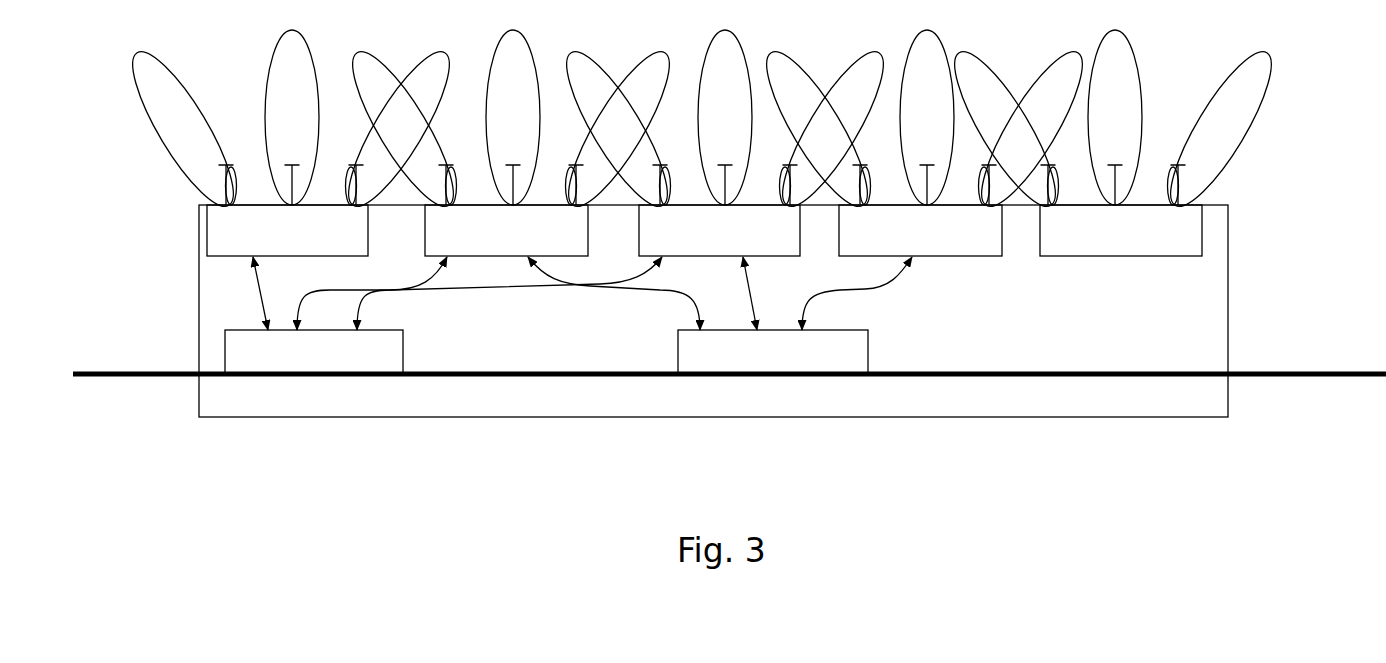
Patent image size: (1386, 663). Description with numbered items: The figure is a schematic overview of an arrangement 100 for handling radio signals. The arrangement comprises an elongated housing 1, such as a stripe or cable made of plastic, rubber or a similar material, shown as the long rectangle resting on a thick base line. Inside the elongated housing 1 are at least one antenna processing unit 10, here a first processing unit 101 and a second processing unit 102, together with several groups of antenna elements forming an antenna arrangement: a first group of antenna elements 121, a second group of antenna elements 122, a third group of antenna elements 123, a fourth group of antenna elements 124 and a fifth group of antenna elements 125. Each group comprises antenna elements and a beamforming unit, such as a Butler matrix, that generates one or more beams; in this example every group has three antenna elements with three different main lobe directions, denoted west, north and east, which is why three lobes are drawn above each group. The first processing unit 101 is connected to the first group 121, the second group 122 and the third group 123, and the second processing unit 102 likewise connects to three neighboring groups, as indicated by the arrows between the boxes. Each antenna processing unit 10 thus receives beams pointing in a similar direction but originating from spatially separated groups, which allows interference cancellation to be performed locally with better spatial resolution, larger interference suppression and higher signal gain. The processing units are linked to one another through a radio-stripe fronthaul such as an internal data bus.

The elongated housing 1 is at (1151, 335).
The antenna processing unit 10 is at (320, 375).
The arrangement 100 is at (128, 200).
The first processing unit 101 is at (302, 373).
The second processing unit 102 is at (760, 373).
The first group of antenna elements 121 is at (285, 250).
The second group of antenna elements 122 is at (505, 250).
The third group of antenna elements 123 is at (718, 250).
The fourth group of antenna elements 124 is at (920, 250).
The fifth group of antenna elements 125 is at (1118, 250).